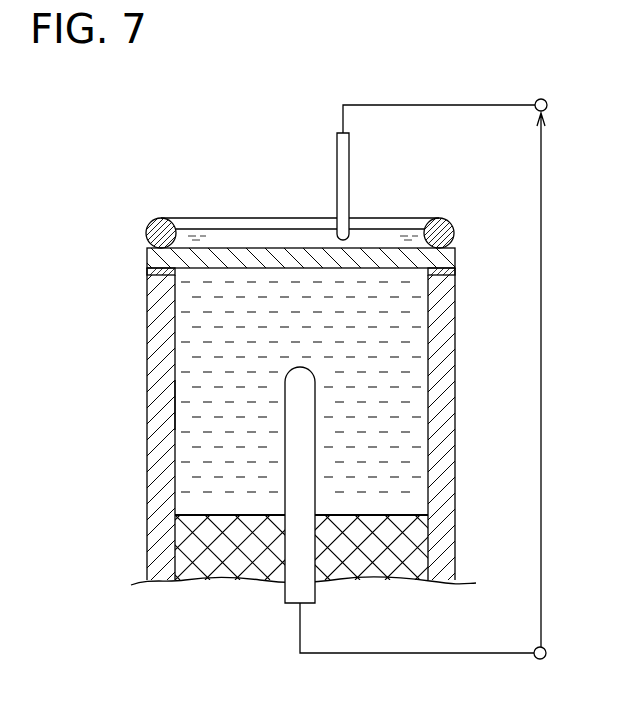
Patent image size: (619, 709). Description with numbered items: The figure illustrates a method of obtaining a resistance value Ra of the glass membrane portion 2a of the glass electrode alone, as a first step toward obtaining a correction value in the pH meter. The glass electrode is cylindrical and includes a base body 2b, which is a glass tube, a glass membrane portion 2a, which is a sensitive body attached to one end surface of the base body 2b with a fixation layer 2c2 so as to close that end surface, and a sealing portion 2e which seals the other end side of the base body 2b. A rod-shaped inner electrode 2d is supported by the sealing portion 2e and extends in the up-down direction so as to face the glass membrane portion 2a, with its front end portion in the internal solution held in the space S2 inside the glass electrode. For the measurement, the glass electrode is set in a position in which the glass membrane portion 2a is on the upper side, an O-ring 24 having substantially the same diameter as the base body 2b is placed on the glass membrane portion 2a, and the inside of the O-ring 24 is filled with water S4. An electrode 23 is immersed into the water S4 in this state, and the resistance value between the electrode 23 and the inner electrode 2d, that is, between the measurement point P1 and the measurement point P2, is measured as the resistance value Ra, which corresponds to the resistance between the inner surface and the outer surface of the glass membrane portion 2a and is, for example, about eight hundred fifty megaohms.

The glass membrane portion 2a is at (220, 279).
The base body 2b is at (152, 300).
The fixation layer 2c2 is at (147, 271).
The inner electrode 2d is at (292, 480).
The sealing portion 2e is at (200, 514).
The electrode 23 is at (345, 172).
The O-ring 24 is at (165, 218).
The space S2 is at (186, 406).
The water S4 is at (287, 238).
The measurement point P1 is at (558, 105).
The measurement point P2 is at (557, 654).
The resistance value Ra is at (560, 380).